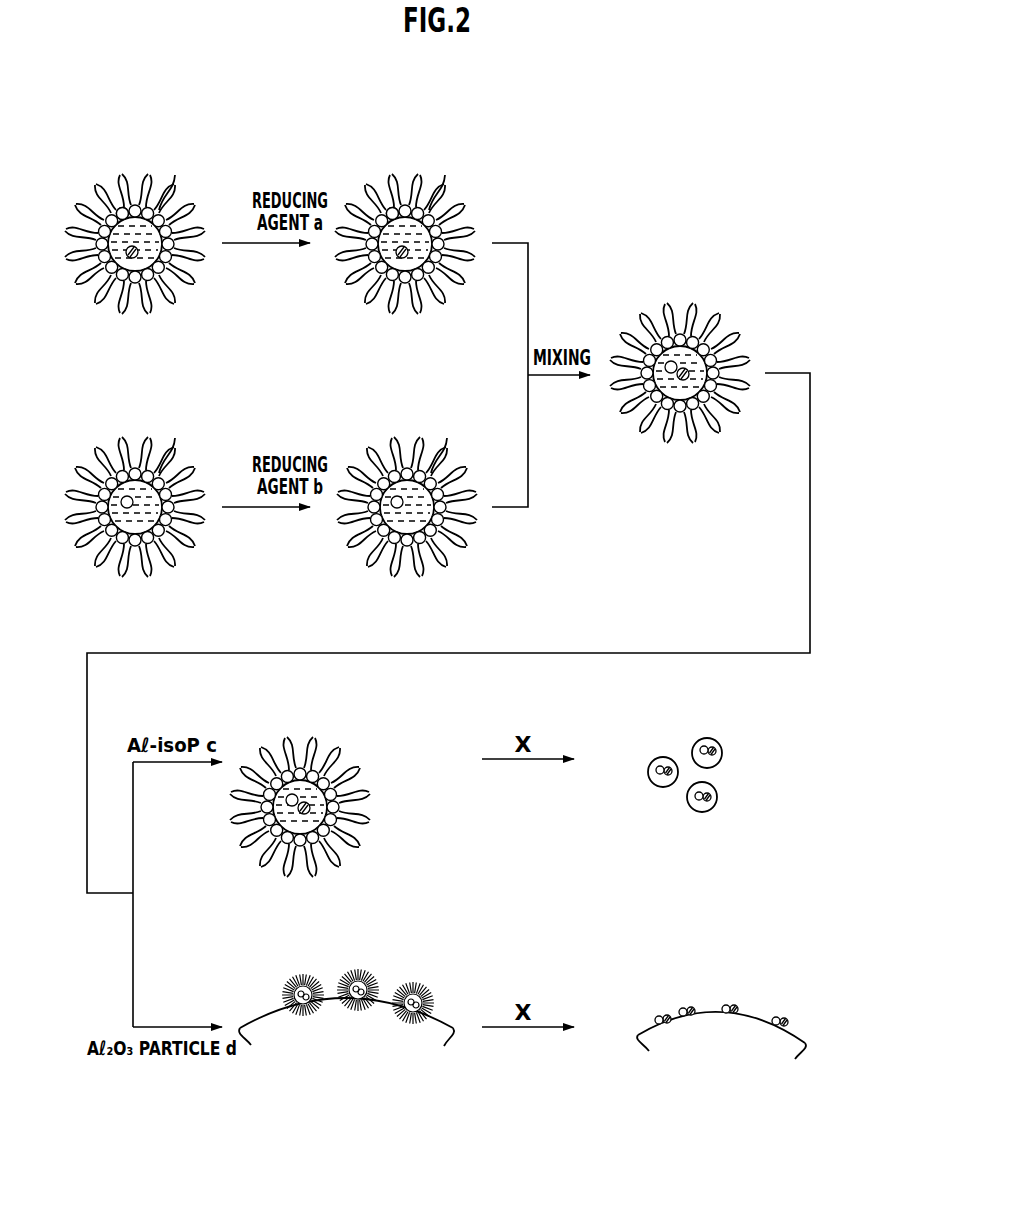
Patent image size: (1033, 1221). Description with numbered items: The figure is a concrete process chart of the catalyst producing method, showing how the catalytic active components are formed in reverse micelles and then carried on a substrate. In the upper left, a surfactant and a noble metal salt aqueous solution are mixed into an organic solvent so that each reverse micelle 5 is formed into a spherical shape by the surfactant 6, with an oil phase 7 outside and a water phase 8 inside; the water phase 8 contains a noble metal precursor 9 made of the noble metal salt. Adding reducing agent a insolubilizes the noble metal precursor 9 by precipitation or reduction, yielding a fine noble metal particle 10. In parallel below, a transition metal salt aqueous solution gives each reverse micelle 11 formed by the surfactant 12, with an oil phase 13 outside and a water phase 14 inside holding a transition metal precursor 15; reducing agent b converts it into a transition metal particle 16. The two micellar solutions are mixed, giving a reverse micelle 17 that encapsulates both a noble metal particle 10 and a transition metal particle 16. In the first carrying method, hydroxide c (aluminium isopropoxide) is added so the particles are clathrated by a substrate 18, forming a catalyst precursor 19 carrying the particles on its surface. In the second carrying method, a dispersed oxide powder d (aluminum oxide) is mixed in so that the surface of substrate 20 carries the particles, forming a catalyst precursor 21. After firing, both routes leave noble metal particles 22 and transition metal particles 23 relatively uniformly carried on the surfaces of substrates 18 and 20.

The reverse micelle 5 is at (168, 165).
The surfactant 6 is at (178, 192).
The oil phase 7 is at (222, 206).
The water phase 8 is at (125, 212).
The noble metal precursor 9 is at (134, 260).
The noble metal particle 10 is at (403, 260).
The reverse micelle 11 is at (165, 430).
The surfactant 12 is at (178, 455).
The oil phase 13 is at (222, 536).
The water phase 14 is at (135, 522).
The transition metal precursor 15 is at (125, 475).
The transition metal particle 16 is at (395, 475).
The reverse micelle 17 is at (710, 294).
The substrate 18 is at (301, 792).
The catalyst precursor 19 is at (288, 785).
The substrate 20 is at (330, 1005).
The catalyst precursor 21 is at (382, 956).
The noble metal particle 22 is at (714, 746).
The transition metal particle 23 is at (702, 746).